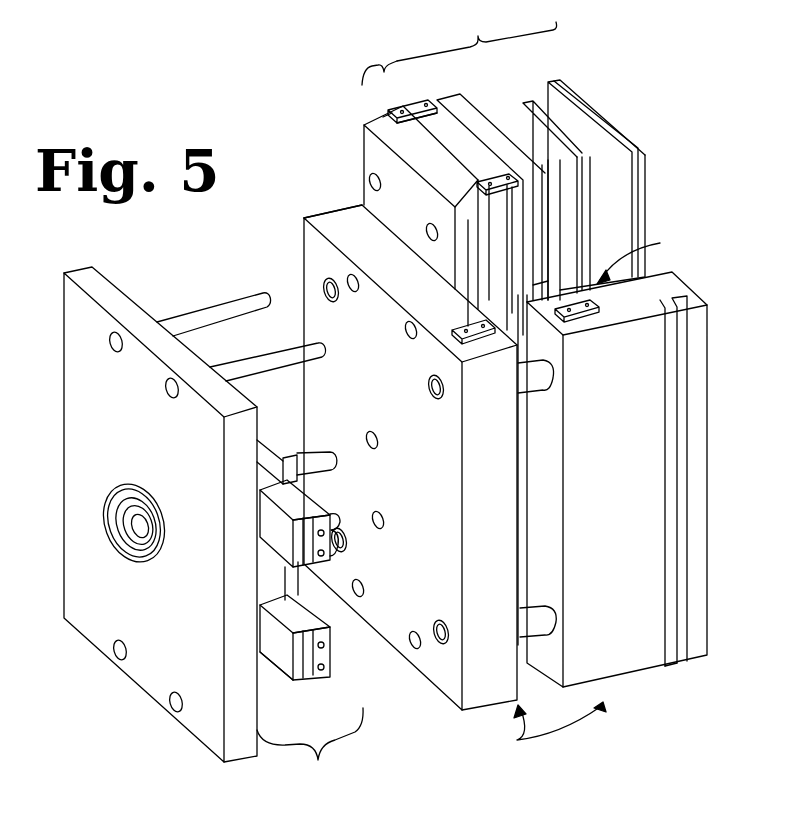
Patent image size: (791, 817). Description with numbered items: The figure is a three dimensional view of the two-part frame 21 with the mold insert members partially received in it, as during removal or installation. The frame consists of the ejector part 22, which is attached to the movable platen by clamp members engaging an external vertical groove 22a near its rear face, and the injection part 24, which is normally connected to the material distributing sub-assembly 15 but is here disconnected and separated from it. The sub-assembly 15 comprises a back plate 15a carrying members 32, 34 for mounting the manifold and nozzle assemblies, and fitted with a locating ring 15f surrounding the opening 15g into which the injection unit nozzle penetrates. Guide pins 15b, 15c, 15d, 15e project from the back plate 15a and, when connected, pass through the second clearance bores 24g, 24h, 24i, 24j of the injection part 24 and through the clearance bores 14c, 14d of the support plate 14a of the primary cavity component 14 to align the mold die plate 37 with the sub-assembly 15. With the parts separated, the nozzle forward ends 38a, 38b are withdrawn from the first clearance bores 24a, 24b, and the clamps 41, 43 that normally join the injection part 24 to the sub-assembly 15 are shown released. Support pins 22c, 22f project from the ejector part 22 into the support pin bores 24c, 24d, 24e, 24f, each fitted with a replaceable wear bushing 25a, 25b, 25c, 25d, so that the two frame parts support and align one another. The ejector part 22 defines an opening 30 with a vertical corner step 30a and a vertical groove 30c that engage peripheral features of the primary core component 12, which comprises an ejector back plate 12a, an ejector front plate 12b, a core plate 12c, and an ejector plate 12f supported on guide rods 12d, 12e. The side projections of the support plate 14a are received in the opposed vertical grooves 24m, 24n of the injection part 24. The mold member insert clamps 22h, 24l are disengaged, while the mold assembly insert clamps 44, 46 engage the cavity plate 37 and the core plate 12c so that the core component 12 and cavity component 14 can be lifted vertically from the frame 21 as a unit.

The primary core component 12 is at (478, 40).
The ejector back plate 12a is at (630, 123).
The ejector front plate 12b is at (473, 110).
The core plate 12c is at (443, 123).
The ejector plate guide rod 12d is at (595, 160).
The ejector plate guide rod 12e is at (552, 117).
The ejector plate 12f is at (528, 100).
The primary cavity component 14 is at (384, 72).
The support plate 14a is at (421, 207).
The clearance bore 14c is at (430, 240).
The clearance bore 14d is at (373, 173).
The material distributing sub-assembly 15 is at (318, 760).
The back plate 15a is at (160, 514).
The guide pin 15b is at (243, 372).
The guide pin 15c is at (210, 316).
The guide pin 15d is at (122, 640).
The guide pin 15e is at (176, 692).
The locating ring 15f is at (120, 490).
The opening 15g is at (141, 512).
The two-part frame 21 is at (549, 725).
The ejector part 22 is at (612, 479).
The external vertical groove 22a is at (677, 648).
The support pin 22c is at (532, 377).
The support pin 22f is at (533, 627).
The mold member insert clamp 22h is at (570, 300).
The injection part 24 is at (410, 457).
The first clearance bore 24a is at (370, 440).
The first clearance bore 24b is at (378, 508).
The support pin bore 24c is at (430, 390).
The support pin bore 24d is at (328, 280).
The support pin bore 24e is at (340, 552).
The support pin bore 24f is at (441, 620).
The second clearance bore 24g is at (412, 340).
The second clearance bore 24h is at (355, 292).
The clearance bore 24i is at (356, 596).
The clearance bore 24j is at (414, 650).
The mold member insert clamp 24l is at (468, 290).
The vertical groove 24m is at (365, 243).
The vertical groove 24n is at (472, 326).
The support pin bushing 25a is at (432, 381).
The support pin bushing 25b is at (326, 284).
The support pin bushing 25c is at (344, 530).
The support pin bushing 25d is at (435, 626).
The opening 30 is at (639, 255).
The vertical corner step 30a is at (698, 292).
The vertical groove 30c is at (557, 297).
The member 32 is at (275, 675).
The member 34 is at (290, 680).
The mold die plate 37 is at (383, 117).
The nozzle forward end 38a is at (318, 462).
The nozzle forward end 38b is at (337, 512).
The clamp 41 is at (295, 523).
The clamp 43 is at (295, 637).
The mold assembly insert clamp 44 is at (494, 180).
The mold assembly insert clamp 46 is at (398, 108).